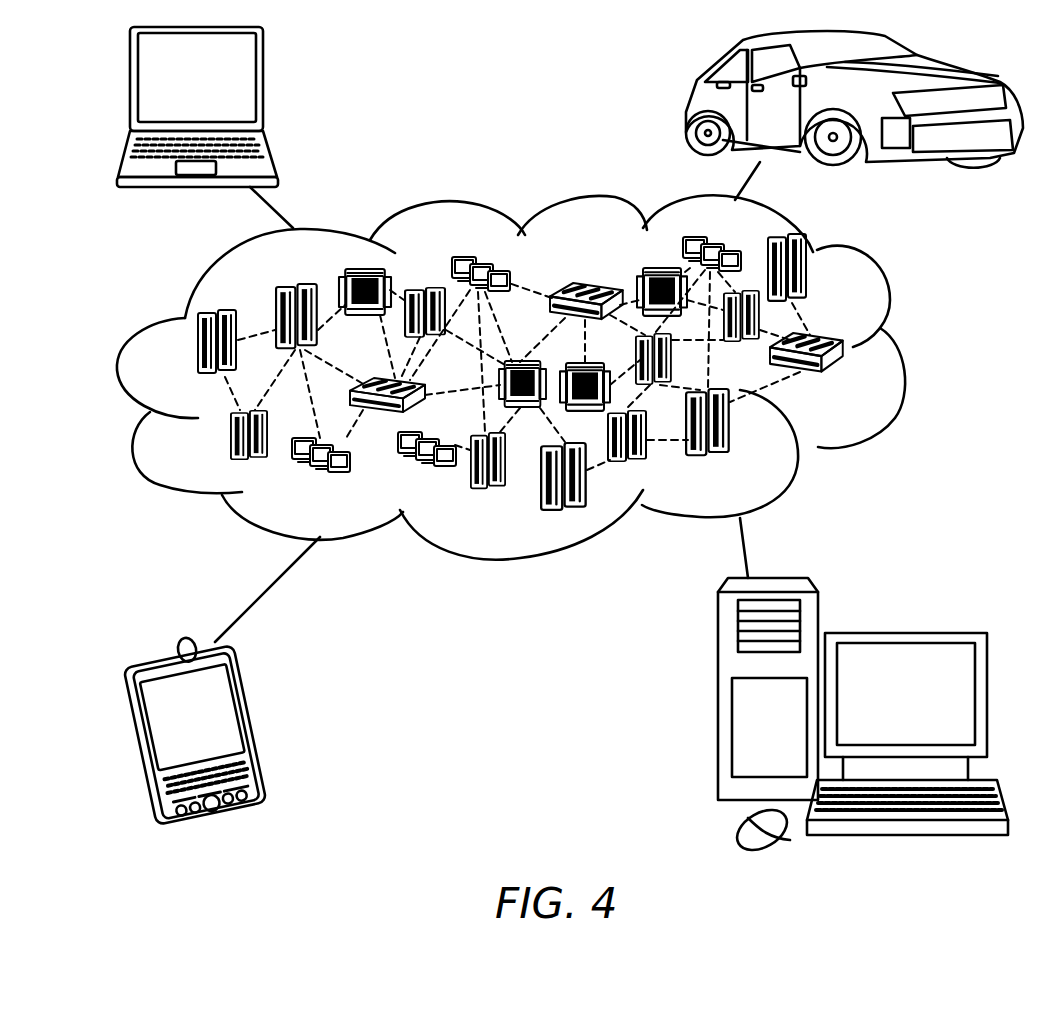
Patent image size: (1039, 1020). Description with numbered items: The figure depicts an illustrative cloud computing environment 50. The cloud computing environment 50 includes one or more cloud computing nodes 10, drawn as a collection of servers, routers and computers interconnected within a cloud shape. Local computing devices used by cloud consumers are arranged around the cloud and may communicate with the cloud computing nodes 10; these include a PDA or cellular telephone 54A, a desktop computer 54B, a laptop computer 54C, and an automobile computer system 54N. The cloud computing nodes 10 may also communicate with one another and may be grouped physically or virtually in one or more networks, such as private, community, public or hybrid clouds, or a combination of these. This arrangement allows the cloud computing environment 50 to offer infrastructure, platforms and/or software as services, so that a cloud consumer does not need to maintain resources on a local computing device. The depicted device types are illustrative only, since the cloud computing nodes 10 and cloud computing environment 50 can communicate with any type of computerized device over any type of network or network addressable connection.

The cloud computing environment 50 is at (900, 352).
The cloud computing nodes 10 is at (862, 384).
The PDA or cellular telephone 54A is at (255, 722).
The desktop computer 54B is at (903, 633).
The laptop computer 54C is at (263, 82).
The automobile computer system 54N is at (688, 99).